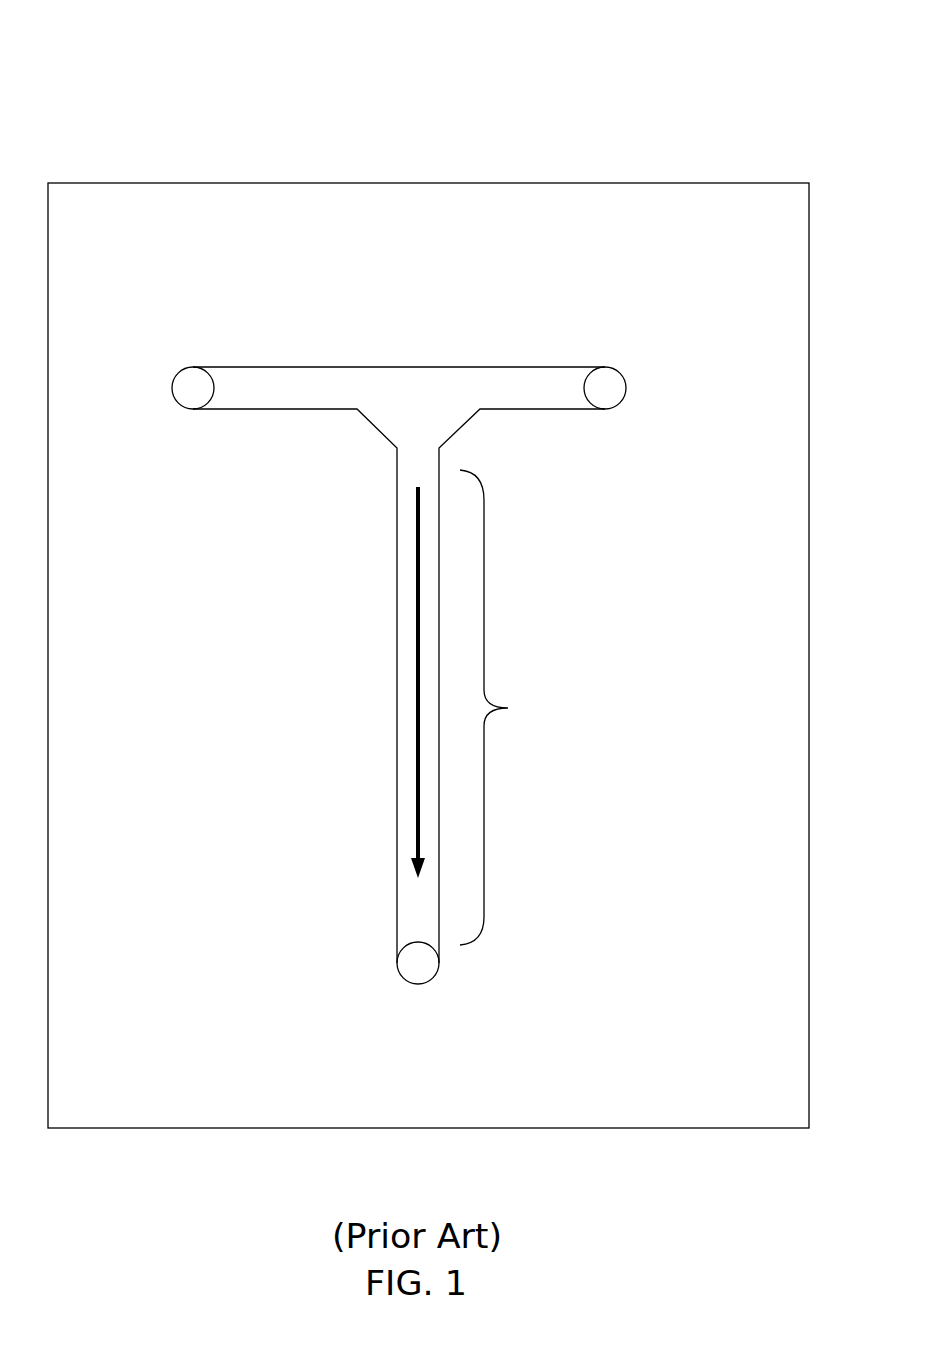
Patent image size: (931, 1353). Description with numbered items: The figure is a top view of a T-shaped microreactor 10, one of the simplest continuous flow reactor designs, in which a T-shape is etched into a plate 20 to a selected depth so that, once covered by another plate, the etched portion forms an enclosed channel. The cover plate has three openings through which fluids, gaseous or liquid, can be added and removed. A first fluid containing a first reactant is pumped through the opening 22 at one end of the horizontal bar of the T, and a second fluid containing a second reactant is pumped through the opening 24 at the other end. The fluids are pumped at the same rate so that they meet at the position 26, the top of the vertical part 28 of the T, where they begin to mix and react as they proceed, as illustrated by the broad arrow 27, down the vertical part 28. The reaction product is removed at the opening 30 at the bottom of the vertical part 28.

The T-shaped microreactor 10 is at (691, 84).
The plate 20 is at (313, 252).
The opening 22 is at (193, 388).
The opening 24 is at (603, 388).
The position 26 is at (398, 429).
The broad arrow 27 is at (418, 652).
The vertical part 28 is at (506, 707).
The opening 30 is at (420, 963).